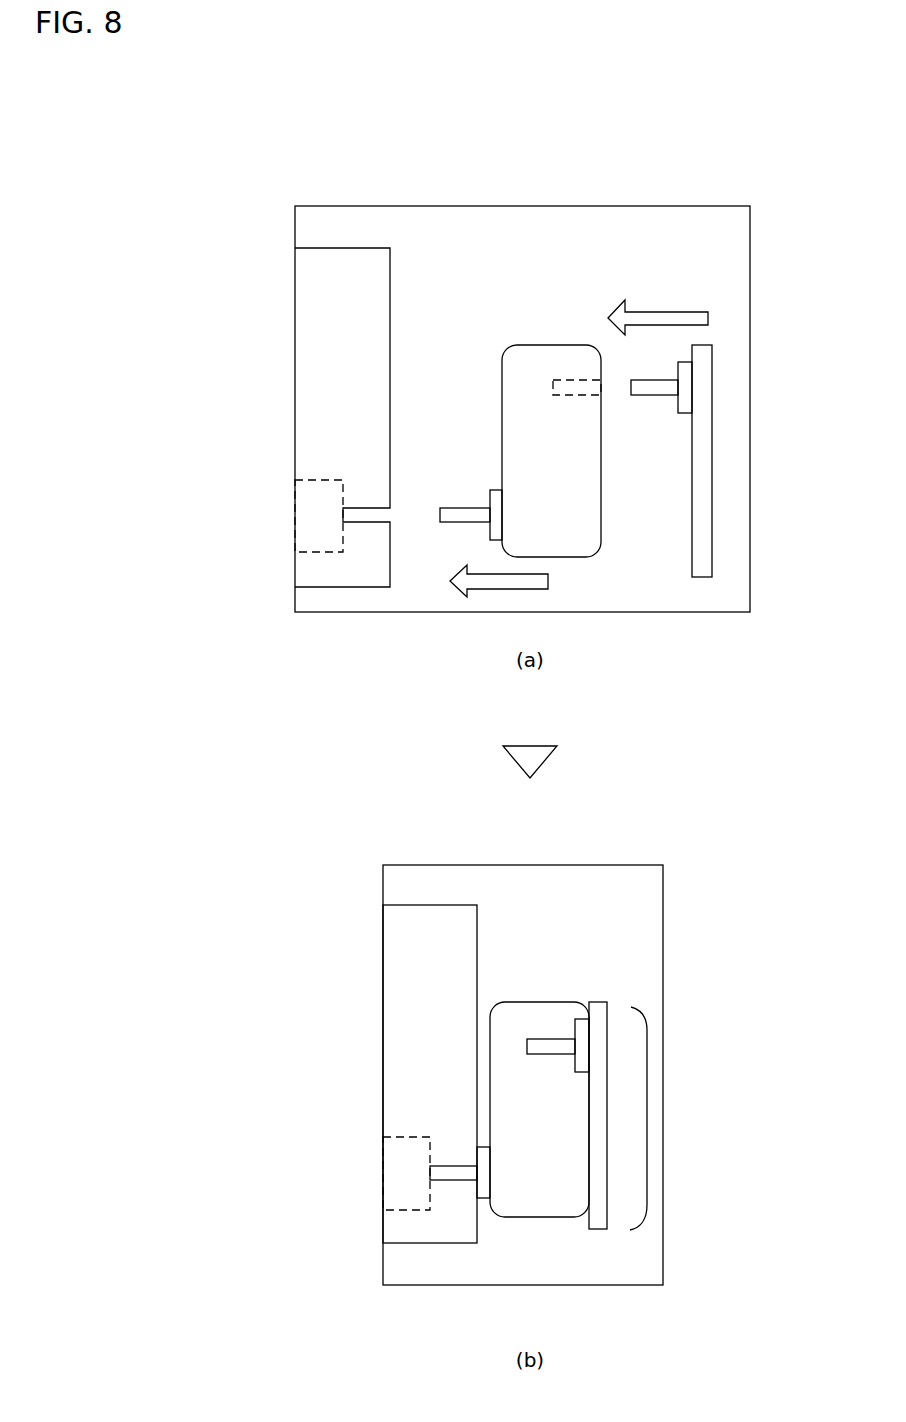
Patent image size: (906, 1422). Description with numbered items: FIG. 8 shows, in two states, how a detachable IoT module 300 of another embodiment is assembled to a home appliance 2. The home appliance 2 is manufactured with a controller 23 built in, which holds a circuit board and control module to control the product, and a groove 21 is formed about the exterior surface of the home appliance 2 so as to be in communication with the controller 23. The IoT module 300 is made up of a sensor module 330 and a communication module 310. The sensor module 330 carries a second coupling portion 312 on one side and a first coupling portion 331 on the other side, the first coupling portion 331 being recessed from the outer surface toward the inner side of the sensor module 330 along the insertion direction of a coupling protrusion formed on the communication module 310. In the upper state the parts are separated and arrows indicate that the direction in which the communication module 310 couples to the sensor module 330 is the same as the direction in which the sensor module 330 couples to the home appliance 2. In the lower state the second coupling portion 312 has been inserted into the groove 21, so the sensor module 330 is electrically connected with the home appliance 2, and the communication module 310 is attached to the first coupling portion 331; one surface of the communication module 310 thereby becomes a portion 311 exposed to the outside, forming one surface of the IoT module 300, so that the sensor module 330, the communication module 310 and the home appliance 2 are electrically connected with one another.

The home appliance 2 is at (343, 248).
The groove 21 is at (368, 521).
The controller 23 is at (313, 480).
The IoT module 300 is at (568, 986).
The communication module 310 is at (732, 349).
The exposed portion 311 is at (648, 1108).
The second coupling portion 312 is at (446, 522).
The sensor module 330 is at (587, 314).
The first coupling portion 331 is at (580, 395).